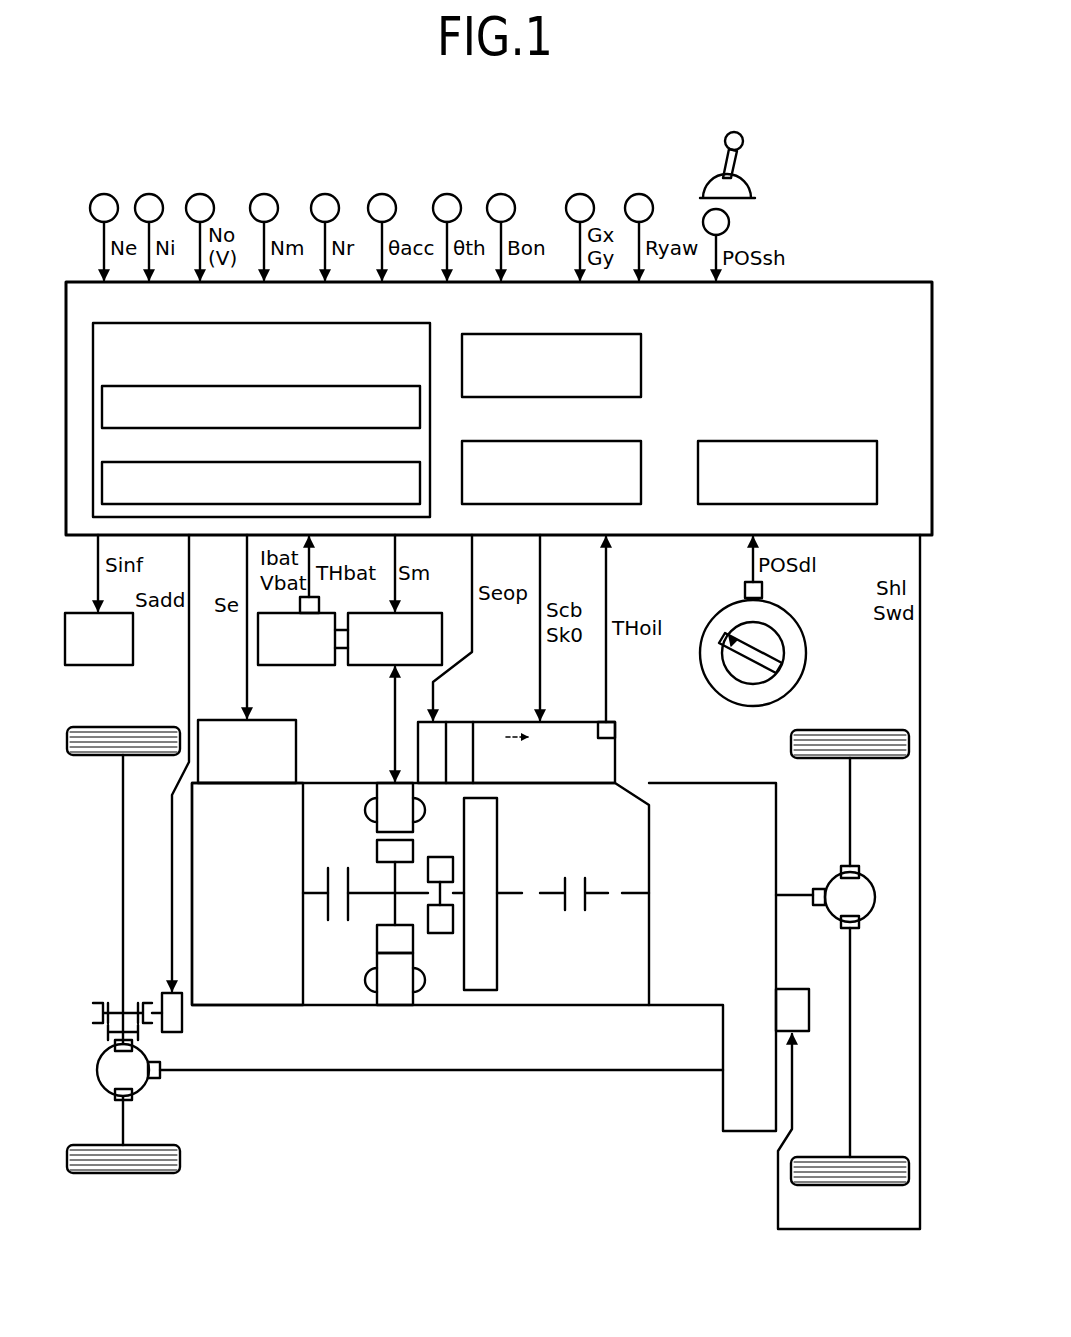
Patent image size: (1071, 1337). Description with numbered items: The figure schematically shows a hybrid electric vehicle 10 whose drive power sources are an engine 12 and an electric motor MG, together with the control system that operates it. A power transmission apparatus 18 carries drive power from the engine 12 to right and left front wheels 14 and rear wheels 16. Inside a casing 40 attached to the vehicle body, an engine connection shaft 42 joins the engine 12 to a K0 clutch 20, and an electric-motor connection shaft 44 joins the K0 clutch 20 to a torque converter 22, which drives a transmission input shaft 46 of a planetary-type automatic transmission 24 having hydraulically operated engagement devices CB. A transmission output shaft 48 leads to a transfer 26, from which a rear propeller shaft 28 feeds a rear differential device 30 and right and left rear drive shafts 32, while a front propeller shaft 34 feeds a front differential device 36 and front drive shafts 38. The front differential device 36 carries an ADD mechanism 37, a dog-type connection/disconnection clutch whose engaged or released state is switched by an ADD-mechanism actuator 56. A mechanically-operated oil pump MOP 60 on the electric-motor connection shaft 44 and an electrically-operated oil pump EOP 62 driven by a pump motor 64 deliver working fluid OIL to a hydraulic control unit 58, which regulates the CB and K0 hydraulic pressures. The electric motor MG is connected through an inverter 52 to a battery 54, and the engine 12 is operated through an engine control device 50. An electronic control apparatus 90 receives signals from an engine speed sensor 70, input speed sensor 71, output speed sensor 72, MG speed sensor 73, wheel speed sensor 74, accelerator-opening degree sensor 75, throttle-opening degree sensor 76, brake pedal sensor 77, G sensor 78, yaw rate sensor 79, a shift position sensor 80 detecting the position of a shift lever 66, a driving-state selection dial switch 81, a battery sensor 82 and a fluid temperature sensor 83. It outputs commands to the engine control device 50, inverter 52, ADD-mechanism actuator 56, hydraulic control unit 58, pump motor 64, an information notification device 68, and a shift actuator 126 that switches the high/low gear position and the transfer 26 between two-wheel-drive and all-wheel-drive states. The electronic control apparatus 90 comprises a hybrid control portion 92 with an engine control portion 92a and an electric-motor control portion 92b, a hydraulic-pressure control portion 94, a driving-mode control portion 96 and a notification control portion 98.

The vehicle 10 is at (854, 133).
The engine 12 is at (240, 999).
The front wheels 14 is at (139, 740).
The rear wheels 16 is at (876, 742).
The power transmission apparatus 18 is at (322, 726).
The K0 clutch 20 is at (328, 882).
The torque converter 22 is at (474, 982).
The automatic transmission 24 is at (565, 988).
The transfer 26 is at (694, 1014).
The rear propeller shaft 28 is at (795, 902).
The rear differential device 30 is at (857, 889).
The rear drive shafts 32 is at (853, 816).
The front propeller shaft 34 is at (463, 1073).
The front differential device 36 is at (113, 1060).
The ADD mechanism 37 is at (87, 1006).
The front drive shafts 38 is at (121, 814).
The casing 40 is at (440, 1008).
The engine connection shaft 42 is at (308, 893).
The electric-motor connection shaft 44 is at (375, 893).
The transmission input shaft 46 is at (505, 893).
The transmission output shaft 48 is at (637, 893).
The engine control device 50 is at (207, 722).
The inverter 52 is at (418, 624).
The battery 54 is at (298, 660).
The ADD-mechanism actuator 56 is at (174, 1032).
The hydraulic control unit 58 is at (618, 752).
The MOP 60 is at (437, 932).
The EOP 62 is at (458, 722).
The pump motor 64 is at (438, 721).
The shift lever 66 is at (743, 137).
The information notification device 68 is at (77, 656).
The engine speed sensor 70 is at (108, 204).
The input speed sensor 71 is at (153, 204).
The output speed sensor 72 is at (204, 204).
The MG speed sensor 73 is at (268, 204).
The wheel speed sensor 74 is at (329, 204).
The accelerator-opening degree sensor 75 is at (386, 204).
The throttle-opening degree sensor 76 is at (451, 204).
The brake pedal sensor 77 is at (505, 204).
The G sensor 78 is at (584, 204).
The yaw rate sensor 79 is at (643, 204).
The shift position sensor 80 is at (724, 233).
The driving-state selection dial switch 81 is at (753, 706).
The battery sensor 82 is at (322, 606).
The fluid temperature sensor 83 is at (611, 714).
The electronic control apparatus 90 is at (873, 294).
The hybrid control portion 92 is at (360, 331).
The engine control portion 92a is at (302, 397).
The electric-motor control portion 92b is at (302, 473).
The hydraulic-pressure control portion 94 is at (597, 349).
The driving-mode control portion 96 is at (597, 456).
The notification control portion 98 is at (833, 456).
The shift actuator 126 is at (800, 1010).